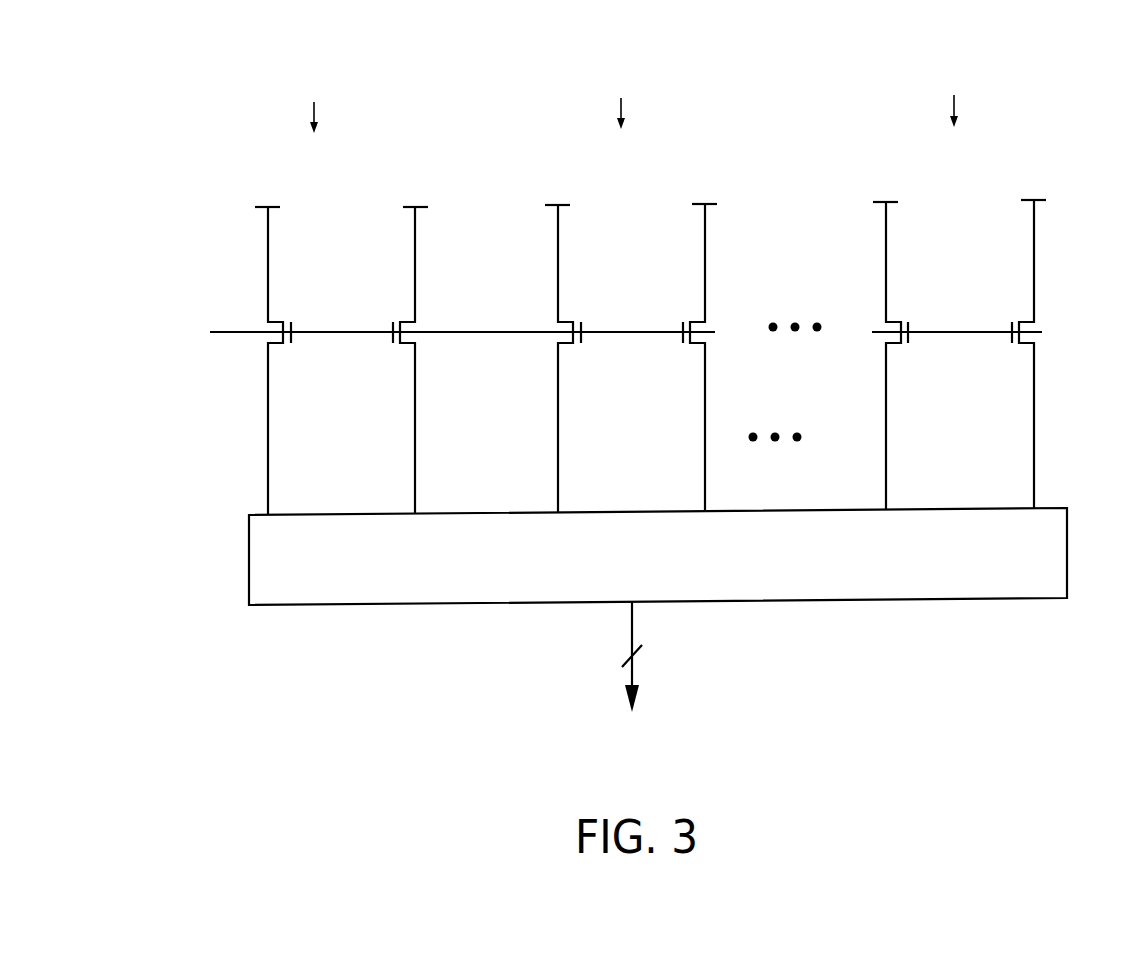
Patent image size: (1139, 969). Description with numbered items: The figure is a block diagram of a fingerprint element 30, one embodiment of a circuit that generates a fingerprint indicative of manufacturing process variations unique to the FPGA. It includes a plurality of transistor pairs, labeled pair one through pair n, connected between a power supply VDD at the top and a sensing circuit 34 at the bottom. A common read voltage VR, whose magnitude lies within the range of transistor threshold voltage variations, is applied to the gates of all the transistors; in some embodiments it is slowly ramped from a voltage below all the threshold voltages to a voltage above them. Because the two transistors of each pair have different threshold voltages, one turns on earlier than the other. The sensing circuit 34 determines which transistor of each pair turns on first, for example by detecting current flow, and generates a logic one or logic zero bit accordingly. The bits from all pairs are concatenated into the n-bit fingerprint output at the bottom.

The fingerprint element 30 is at (100, 103).
The sensing circuit 34 is at (249, 562).